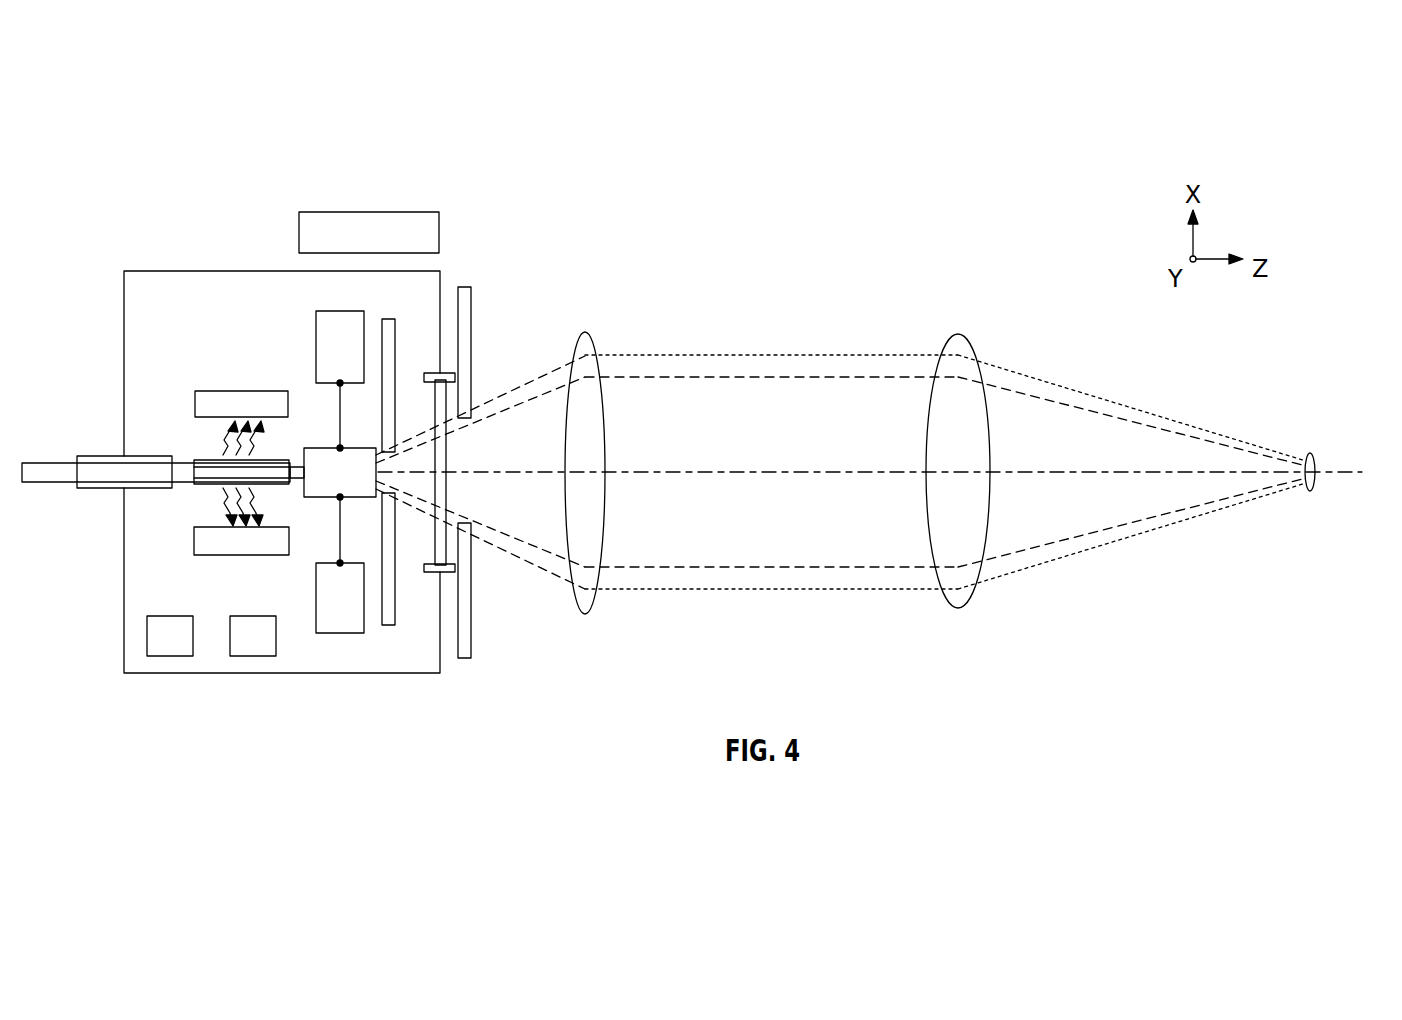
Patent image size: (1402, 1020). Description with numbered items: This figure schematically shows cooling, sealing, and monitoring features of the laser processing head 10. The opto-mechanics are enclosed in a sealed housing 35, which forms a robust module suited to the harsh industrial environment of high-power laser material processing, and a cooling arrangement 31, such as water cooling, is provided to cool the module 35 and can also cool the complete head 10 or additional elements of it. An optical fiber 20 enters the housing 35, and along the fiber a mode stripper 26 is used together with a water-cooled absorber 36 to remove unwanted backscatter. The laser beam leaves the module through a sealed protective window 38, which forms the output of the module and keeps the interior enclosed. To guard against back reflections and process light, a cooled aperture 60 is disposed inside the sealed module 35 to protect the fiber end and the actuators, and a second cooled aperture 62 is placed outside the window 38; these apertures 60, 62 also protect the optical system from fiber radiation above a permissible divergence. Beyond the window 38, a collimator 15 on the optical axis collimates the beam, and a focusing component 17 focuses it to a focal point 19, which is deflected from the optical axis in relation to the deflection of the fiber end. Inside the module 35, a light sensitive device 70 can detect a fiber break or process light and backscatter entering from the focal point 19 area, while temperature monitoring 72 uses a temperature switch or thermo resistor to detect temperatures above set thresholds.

The laser processing head 10 is at (155, 147).
The collimator 15 is at (585, 614).
The focusing component 17 is at (958, 608).
The focal point 19 is at (1316, 482).
The optical fiber 20 is at (50, 483).
The mode stripper 26 is at (210, 486).
The cooling arrangement 31 is at (351, 212).
The sealed housing 35 is at (178, 271).
The cooled absorber 36 is at (246, 391).
The sealed protective window 38 is at (446, 553).
The cooled aperture 60 is at (388, 626).
The cooled aperture 62 is at (463, 658).
The light sensitive device 70 is at (170, 657).
The temperature monitoring 72 is at (250, 657).